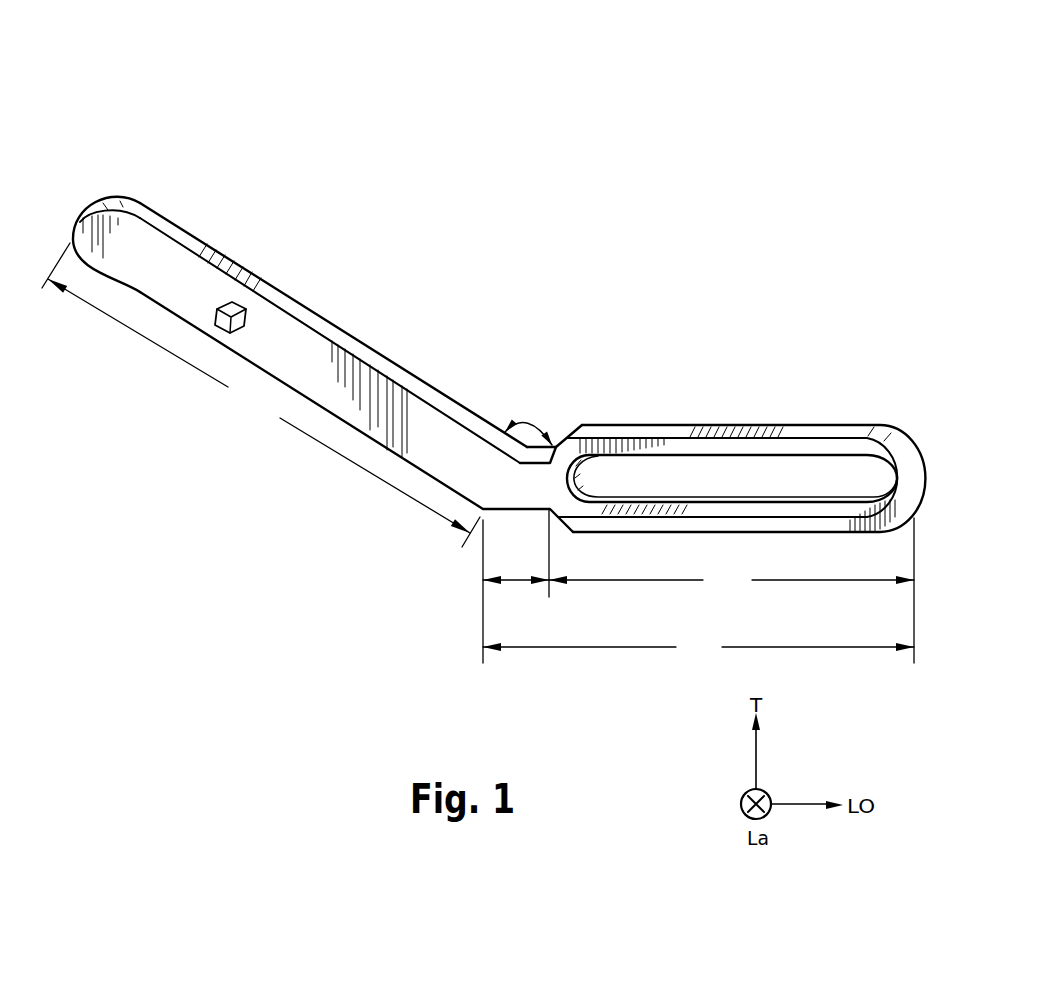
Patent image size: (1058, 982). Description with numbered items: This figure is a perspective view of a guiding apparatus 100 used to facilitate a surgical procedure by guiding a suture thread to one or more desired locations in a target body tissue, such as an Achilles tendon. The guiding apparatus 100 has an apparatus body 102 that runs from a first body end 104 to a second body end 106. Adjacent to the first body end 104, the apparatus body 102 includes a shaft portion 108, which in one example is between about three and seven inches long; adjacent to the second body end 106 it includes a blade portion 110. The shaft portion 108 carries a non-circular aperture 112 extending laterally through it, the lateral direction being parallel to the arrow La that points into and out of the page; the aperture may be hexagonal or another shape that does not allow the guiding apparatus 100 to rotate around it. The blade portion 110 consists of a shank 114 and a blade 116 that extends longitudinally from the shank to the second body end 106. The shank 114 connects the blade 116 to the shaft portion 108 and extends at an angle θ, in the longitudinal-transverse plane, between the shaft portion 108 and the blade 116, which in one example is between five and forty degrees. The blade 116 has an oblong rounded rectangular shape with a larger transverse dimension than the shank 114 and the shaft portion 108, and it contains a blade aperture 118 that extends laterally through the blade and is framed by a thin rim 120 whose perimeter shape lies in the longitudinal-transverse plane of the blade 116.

The guiding apparatus 100 is at (214, 90).
The apparatus body 102 is at (214, 214).
The first body end 104 is at (68, 210).
The second body end 106 is at (932, 507).
The shaft portion 108 is at (261, 395).
The blade portion 110 is at (698, 650).
The non-circular aperture 112 is at (246, 313).
The shank 114 is at (516, 586).
The blade 116 is at (731, 590).
The blade aperture 118 is at (815, 480).
The rim 120 is at (713, 448).